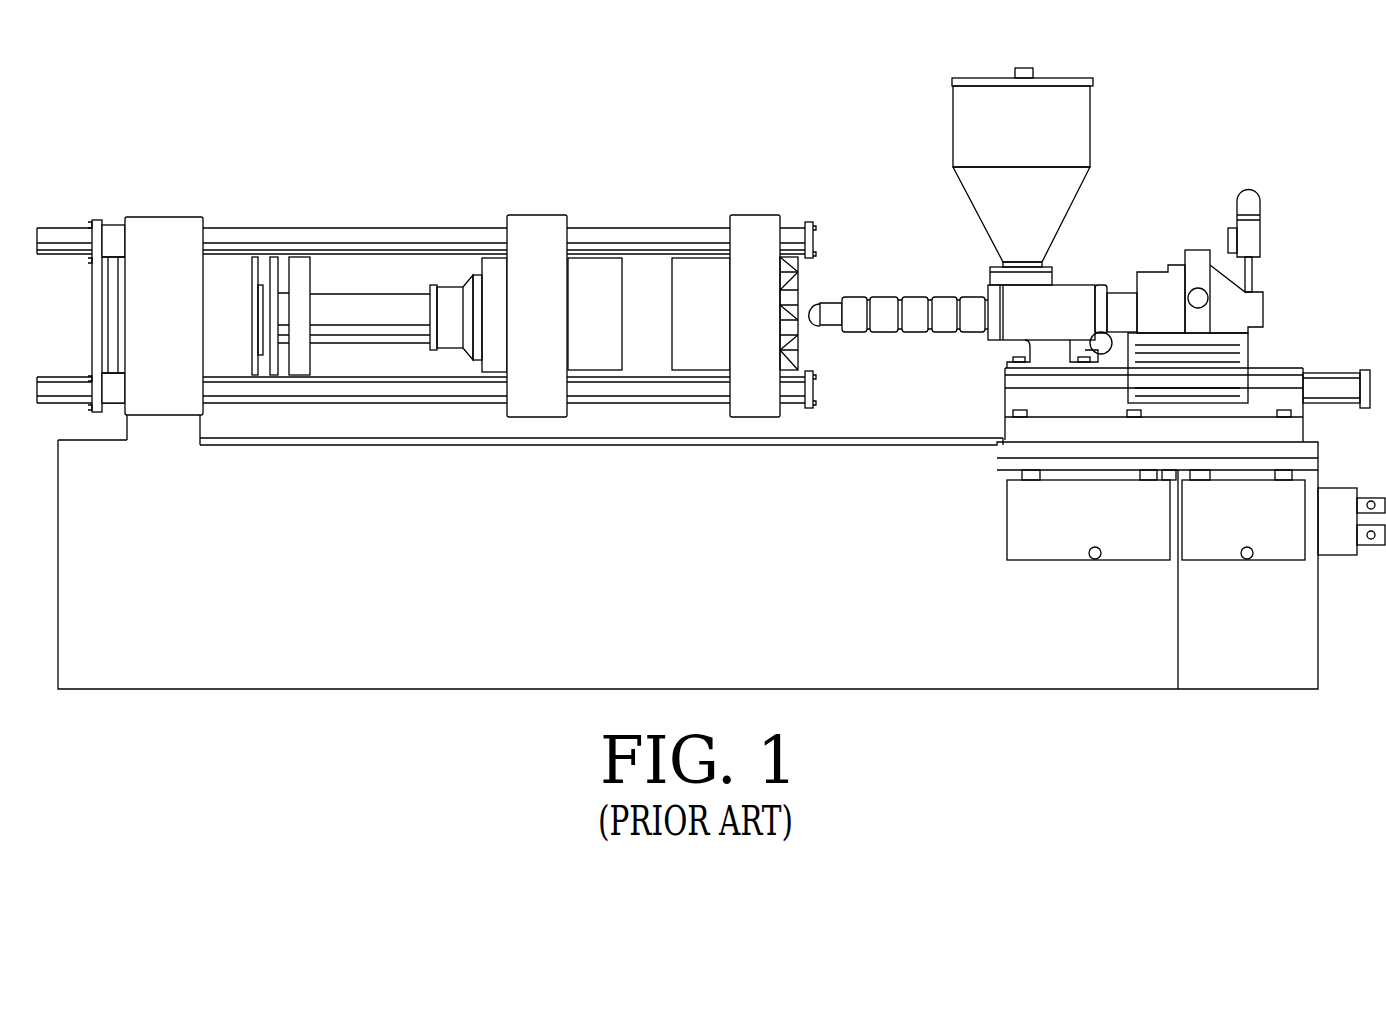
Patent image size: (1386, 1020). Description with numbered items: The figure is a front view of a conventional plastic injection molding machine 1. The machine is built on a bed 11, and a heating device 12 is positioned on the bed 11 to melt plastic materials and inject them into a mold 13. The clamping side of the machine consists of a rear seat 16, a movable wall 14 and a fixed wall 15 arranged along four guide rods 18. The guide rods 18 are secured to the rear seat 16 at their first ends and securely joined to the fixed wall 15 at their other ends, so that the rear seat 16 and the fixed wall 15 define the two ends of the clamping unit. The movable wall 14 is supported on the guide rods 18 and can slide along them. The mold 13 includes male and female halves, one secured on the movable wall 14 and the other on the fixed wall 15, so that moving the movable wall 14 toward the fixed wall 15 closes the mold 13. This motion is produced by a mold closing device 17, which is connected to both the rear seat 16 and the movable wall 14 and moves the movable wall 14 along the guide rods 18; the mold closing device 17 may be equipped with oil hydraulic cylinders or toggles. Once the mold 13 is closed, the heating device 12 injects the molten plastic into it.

The plastic injection molding machine 1 is at (711, 369).
The bed 11 is at (882, 460).
The heating device 12 is at (1125, 252).
The mold 13 is at (605, 270).
The movable wall 14 is at (535, 213).
The fixed wall 15 is at (762, 228).
The rear seat 16 is at (160, 230).
The mold closing device 17 is at (380, 272).
The guide rods 18 is at (265, 237).